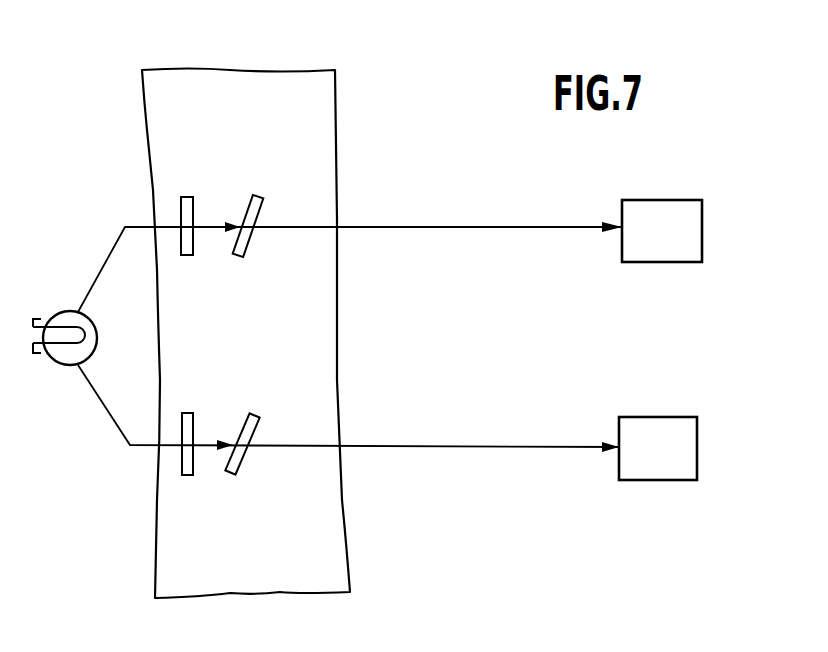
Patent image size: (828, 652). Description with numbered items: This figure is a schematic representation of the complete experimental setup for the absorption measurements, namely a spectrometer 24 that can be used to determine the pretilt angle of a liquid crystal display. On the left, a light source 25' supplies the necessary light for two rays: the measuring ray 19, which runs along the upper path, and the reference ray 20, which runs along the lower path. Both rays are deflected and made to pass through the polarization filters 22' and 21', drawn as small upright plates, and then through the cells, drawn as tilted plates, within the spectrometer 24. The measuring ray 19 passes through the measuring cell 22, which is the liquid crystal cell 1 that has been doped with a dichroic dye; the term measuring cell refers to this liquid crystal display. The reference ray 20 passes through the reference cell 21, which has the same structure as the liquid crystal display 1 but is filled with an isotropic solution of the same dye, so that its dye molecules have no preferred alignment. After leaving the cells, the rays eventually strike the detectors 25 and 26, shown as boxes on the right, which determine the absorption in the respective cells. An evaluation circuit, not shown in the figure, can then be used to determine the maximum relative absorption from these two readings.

The liquid crystal cell 1 is at (229, 196).
The measuring ray 19 is at (110, 253).
The reference ray 20 is at (108, 412).
The reference cell 21 is at (257, 466).
The polarization filter 21' is at (202, 486).
The measuring cell 22 is at (270, 180).
The polarization filter 22' is at (185, 137).
The spectrometer 24 is at (366, 129).
The detector 25 is at (695, 221).
The light source 25' is at (63, 370).
The detector 26 is at (682, 458).